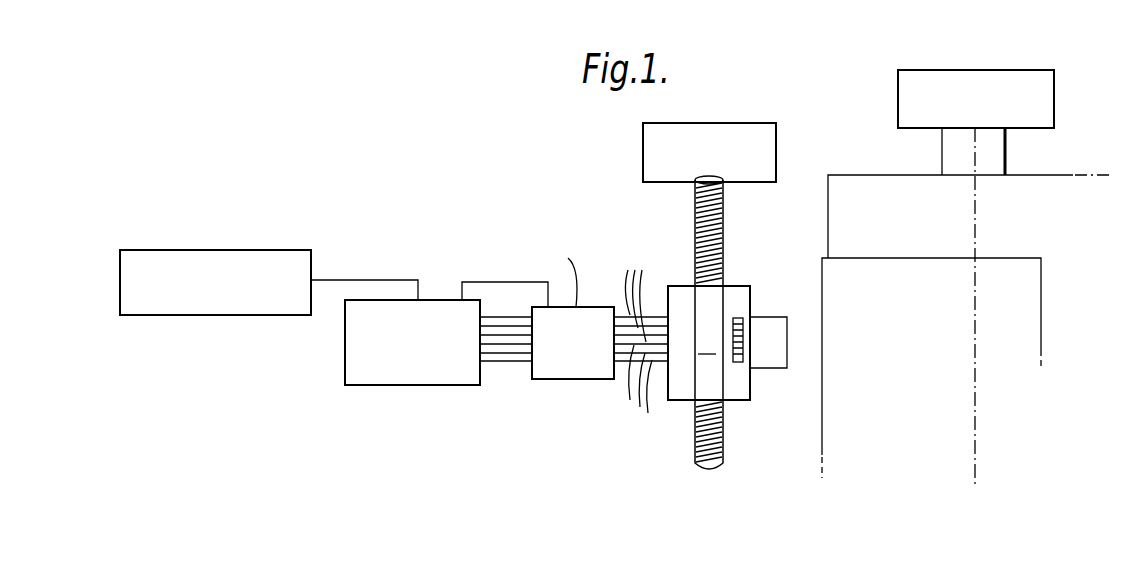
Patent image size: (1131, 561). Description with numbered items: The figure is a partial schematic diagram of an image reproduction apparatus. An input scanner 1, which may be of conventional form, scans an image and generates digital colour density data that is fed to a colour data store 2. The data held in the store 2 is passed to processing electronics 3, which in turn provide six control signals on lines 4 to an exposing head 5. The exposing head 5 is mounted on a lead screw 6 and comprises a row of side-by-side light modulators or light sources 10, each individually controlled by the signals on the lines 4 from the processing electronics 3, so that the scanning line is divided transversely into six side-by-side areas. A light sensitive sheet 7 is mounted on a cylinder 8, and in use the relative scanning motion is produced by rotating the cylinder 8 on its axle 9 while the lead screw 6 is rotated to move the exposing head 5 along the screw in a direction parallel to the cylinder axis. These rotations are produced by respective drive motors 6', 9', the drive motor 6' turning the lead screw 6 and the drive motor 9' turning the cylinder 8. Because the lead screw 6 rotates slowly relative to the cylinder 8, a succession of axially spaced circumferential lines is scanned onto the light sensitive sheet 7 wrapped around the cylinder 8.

The input scanner 1 is at (283, 258).
The colour data store 2 is at (389, 385).
The processing electronics 3 is at (560, 368).
The lines 4 is at (574, 337).
The exposing head 5 is at (727, 343).
The lead screw 6 is at (685, 322).
The drive motor 6' is at (709, 130).
The light sensitive sheet 7 is at (855, 270).
The cylinder 8 is at (883, 182).
The axle 9 is at (993, 306).
The drive motor 9' is at (1000, 99).
The light modulators or light sources 10 is at (740, 318).